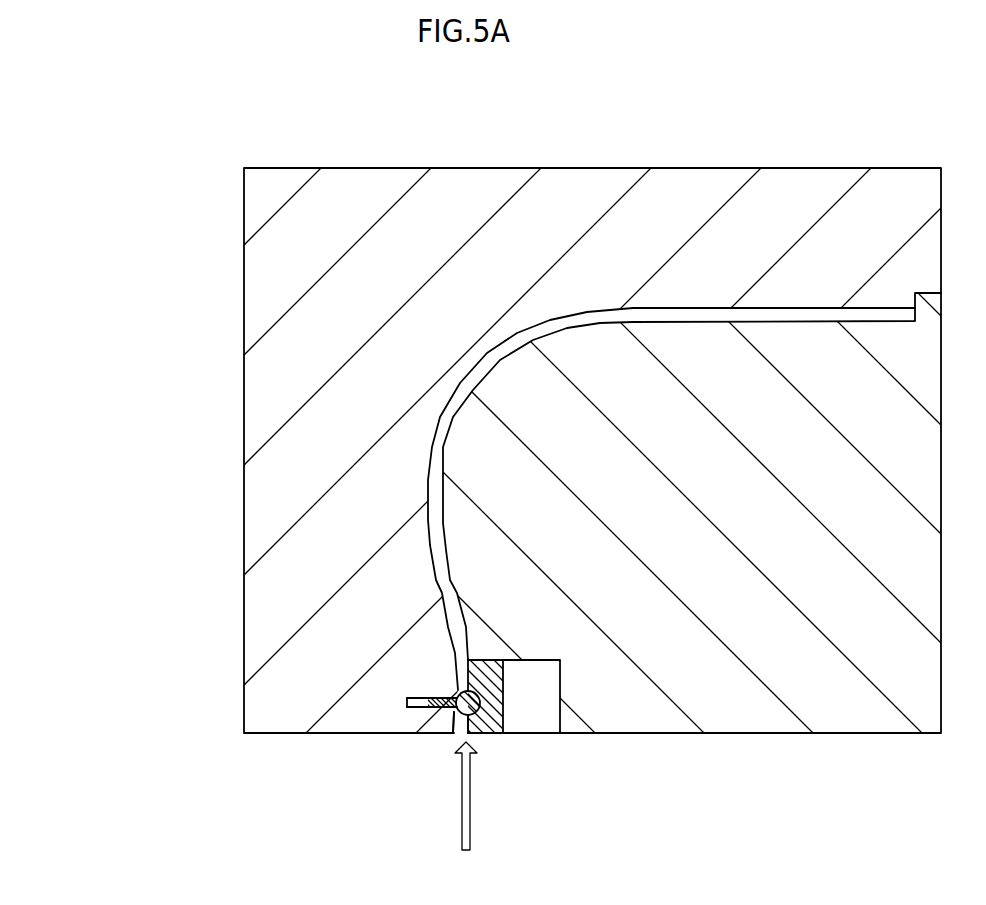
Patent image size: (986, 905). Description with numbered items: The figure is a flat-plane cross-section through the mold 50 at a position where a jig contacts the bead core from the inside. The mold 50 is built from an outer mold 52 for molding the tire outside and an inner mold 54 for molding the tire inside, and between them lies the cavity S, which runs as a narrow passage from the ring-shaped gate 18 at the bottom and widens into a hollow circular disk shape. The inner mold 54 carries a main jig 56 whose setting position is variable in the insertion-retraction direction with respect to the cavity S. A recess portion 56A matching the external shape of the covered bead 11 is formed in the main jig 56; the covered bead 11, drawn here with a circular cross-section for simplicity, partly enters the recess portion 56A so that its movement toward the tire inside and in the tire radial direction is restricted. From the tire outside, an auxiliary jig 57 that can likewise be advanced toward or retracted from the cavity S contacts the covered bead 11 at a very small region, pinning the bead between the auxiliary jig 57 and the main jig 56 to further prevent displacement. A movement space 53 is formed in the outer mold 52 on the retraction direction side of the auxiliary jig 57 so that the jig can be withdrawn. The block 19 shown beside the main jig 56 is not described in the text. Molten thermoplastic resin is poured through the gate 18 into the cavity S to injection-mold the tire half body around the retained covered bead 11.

The mold 50 is at (208, 232).
The outer mold 52 is at (467, 197).
The inner mold 54 is at (832, 702).
The cavity S is at (435, 547).
The covered bead 11 is at (462, 692).
The main jig 56 is at (490, 737).
The recess portion 56A is at (470, 657).
The auxiliary jig 57 is at (450, 698).
The movement space 53 is at (412, 703).
The gate 18 is at (460, 737).
The support block 19 is at (535, 720).